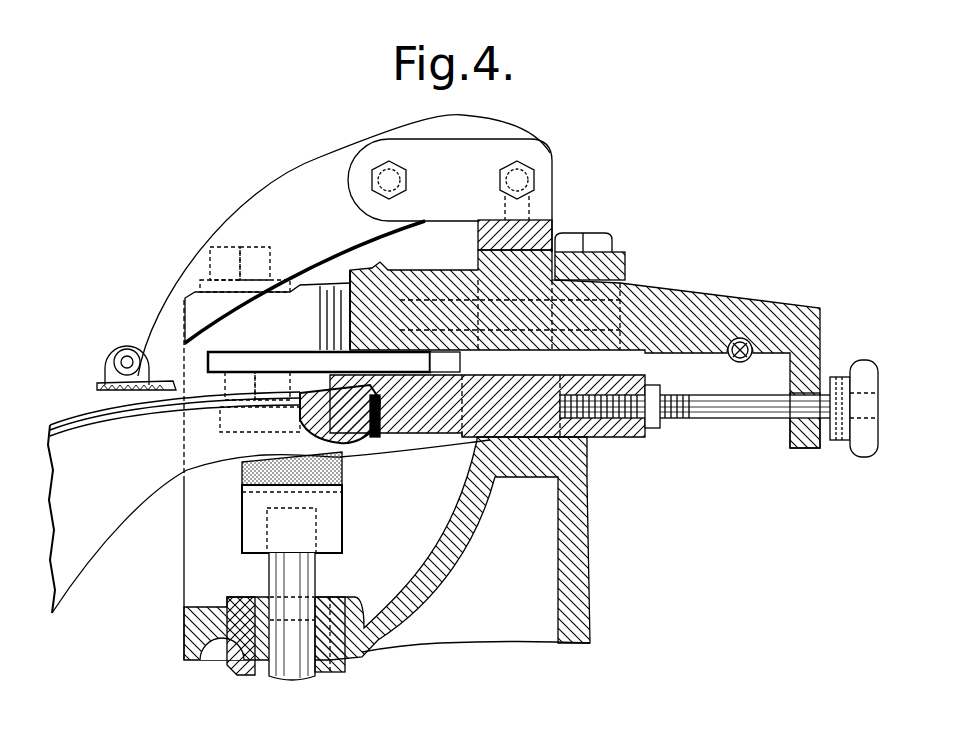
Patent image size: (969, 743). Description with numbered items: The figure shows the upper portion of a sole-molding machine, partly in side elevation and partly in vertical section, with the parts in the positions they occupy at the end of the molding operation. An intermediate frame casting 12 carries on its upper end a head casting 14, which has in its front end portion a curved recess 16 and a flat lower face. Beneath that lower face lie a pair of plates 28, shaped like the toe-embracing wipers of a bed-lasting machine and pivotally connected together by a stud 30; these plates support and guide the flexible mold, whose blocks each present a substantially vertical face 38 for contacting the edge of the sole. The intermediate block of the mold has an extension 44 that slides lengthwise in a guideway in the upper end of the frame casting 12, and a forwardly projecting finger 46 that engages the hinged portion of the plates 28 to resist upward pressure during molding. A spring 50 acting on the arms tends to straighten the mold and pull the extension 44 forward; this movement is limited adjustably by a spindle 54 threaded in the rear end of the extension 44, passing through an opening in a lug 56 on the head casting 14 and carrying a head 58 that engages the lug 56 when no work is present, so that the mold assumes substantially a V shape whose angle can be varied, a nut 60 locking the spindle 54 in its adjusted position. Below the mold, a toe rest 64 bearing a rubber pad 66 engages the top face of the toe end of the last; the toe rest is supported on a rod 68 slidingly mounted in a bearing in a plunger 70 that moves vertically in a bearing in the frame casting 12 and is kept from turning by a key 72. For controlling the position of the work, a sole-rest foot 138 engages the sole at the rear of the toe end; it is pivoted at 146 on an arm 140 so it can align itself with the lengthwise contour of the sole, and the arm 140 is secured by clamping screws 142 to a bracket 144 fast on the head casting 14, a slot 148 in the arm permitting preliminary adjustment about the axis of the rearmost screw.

The intermediate frame casting 12 is at (578, 592).
The head casting 14 is at (688, 300).
The curved recess 16 is at (240, 328).
The plates 28 is at (297, 365).
The stud 30 is at (373, 348).
The vertical face 38 is at (373, 425).
The extension 44 is at (640, 373).
The finger 46 is at (337, 409).
The spring 50 is at (748, 356).
The spindle 54 is at (738, 418).
The lug 56 is at (795, 438).
The head 58 is at (858, 447).
The nut 60 is at (654, 428).
The toe rest 64 is at (248, 525).
The rubber pad 66 is at (243, 478).
The rod 68 is at (270, 571).
The plunger 70 is at (250, 662).
The key 72 is at (345, 671).
The sole-rest foot 138 is at (112, 383).
The arm 140 is at (282, 200).
The clamping screws 142 is at (499, 176).
The bracket 144 is at (550, 165).
The pivot 146 is at (126, 360).
The slot 148 is at (387, 160).